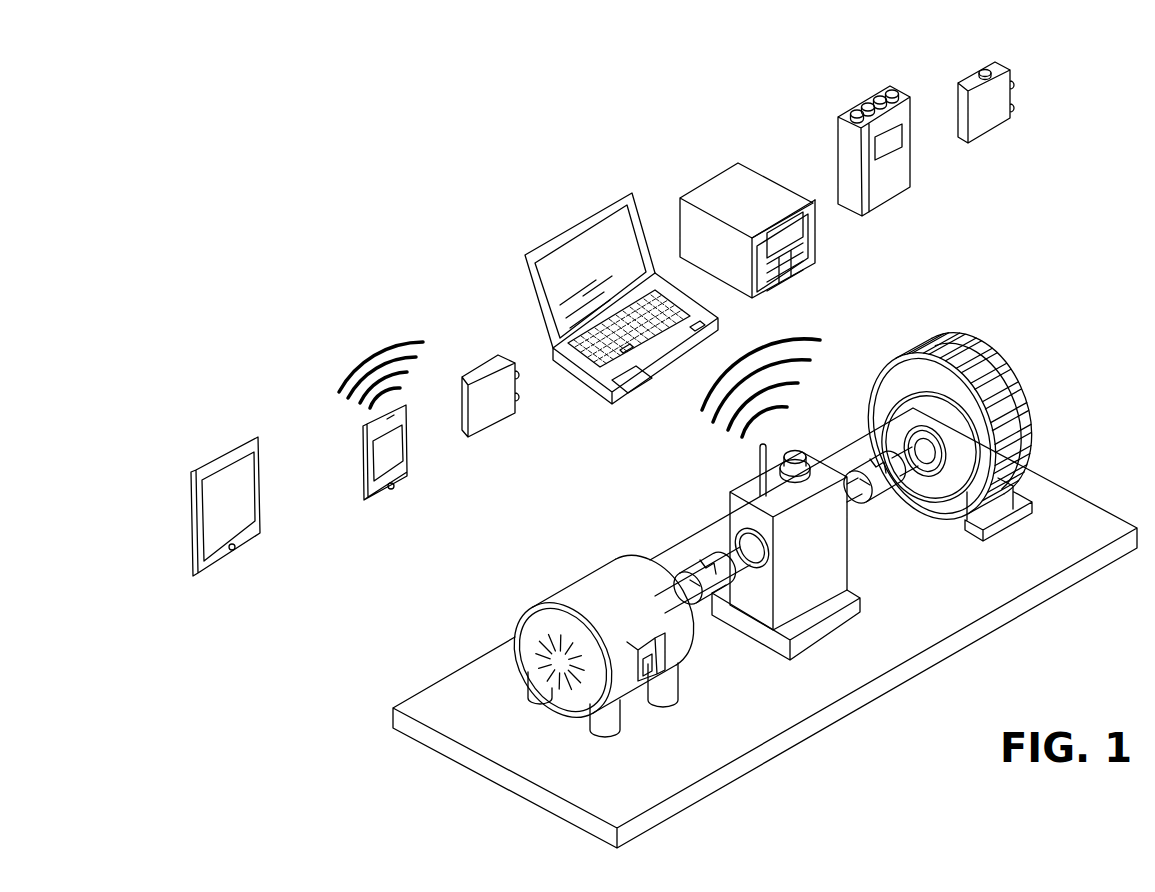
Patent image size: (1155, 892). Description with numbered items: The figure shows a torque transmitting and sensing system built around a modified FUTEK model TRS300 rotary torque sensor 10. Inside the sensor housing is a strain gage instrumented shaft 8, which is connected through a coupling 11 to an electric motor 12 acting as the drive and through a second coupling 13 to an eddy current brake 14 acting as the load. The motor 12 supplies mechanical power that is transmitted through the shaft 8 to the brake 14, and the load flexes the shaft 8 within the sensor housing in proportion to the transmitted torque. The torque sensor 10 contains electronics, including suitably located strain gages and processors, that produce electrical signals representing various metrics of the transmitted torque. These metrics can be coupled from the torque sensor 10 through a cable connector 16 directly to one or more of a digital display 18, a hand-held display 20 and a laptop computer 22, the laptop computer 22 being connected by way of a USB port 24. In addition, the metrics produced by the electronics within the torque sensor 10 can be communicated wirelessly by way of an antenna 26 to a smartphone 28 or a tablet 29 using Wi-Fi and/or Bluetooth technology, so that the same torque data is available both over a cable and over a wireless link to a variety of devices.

The shaft 8 is at (740, 568).
The rotary torque sensor 10 is at (832, 577).
The coupling 11 is at (697, 557).
The electric motor 12 is at (560, 594).
The coupling 13 is at (880, 493).
The eddy current brake 14 is at (1007, 385).
The cable connector 16 is at (798, 448).
The digital display 18 is at (725, 170).
The hand-held display 20 is at (872, 100).
The laptop computer 22 is at (576, 222).
The USB port 24 is at (965, 76).
The antenna 26 is at (752, 450).
The smartphone 28 is at (365, 458).
The tablet 29 is at (215, 455).